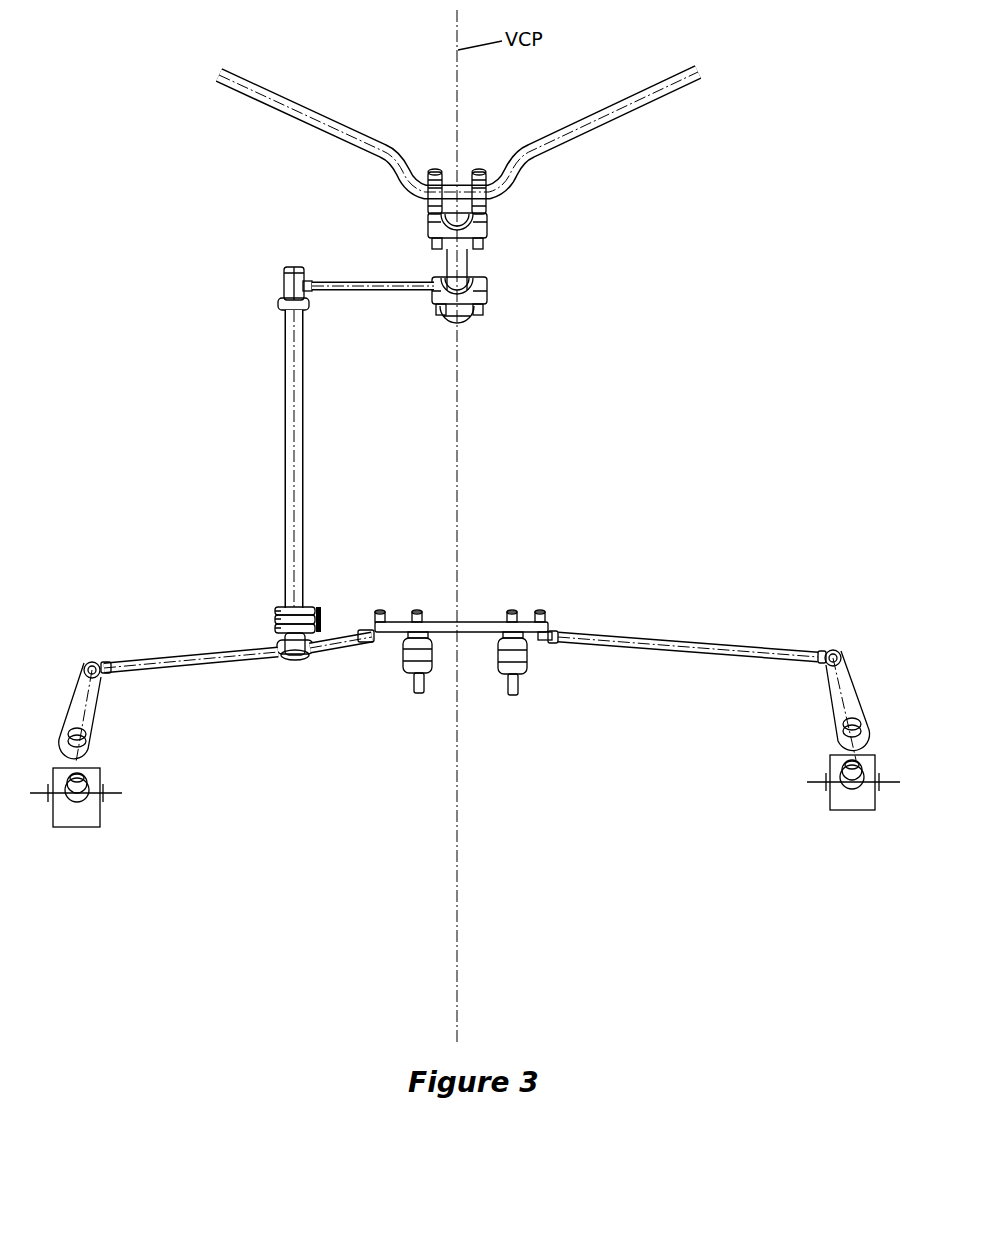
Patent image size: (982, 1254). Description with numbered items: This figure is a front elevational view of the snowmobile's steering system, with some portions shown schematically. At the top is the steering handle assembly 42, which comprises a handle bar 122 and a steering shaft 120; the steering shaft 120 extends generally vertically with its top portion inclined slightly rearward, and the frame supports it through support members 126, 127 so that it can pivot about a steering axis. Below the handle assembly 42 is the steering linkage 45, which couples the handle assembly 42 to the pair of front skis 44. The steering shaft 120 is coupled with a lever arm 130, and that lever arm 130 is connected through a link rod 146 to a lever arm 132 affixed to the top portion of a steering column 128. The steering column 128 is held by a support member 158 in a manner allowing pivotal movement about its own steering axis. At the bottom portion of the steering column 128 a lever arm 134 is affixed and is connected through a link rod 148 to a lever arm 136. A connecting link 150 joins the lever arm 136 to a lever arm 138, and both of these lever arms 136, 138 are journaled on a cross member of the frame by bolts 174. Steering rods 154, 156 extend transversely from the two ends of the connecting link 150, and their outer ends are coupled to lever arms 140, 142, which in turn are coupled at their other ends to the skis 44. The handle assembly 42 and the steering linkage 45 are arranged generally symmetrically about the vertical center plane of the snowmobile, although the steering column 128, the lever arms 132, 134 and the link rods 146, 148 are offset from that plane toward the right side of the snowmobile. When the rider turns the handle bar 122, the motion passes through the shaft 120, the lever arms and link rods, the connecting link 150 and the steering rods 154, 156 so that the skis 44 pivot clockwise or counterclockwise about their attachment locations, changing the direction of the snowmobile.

The steering handle assembly 42 is at (366, 198).
The handle bar 122 is at (328, 110).
The support member 126 is at (488, 230).
The steering shaft 120 is at (463, 267).
The support member 127 is at (483, 297).
The lever arm 130 is at (470, 325).
The steering linkage 45 is at (250, 430).
The lever arm 132 is at (278, 300).
The link rod 146 is at (380, 292).
The steering column 128 is at (305, 440).
The support member 158 is at (278, 612).
The lever arm 134 is at (270, 638).
The link rod 148 is at (337, 637).
The connecting link 150 is at (472, 622).
The lever arm 136 is at (392, 647).
The lever arm 138 is at (530, 643).
The bolts 174 is at (507, 692).
The steering rod 156 is at (632, 630).
The steering rod 154 is at (193, 668).
The lever arm 140 is at (93, 715).
The lever arm 142 is at (833, 700).
The front skis 44 is at (90, 812).